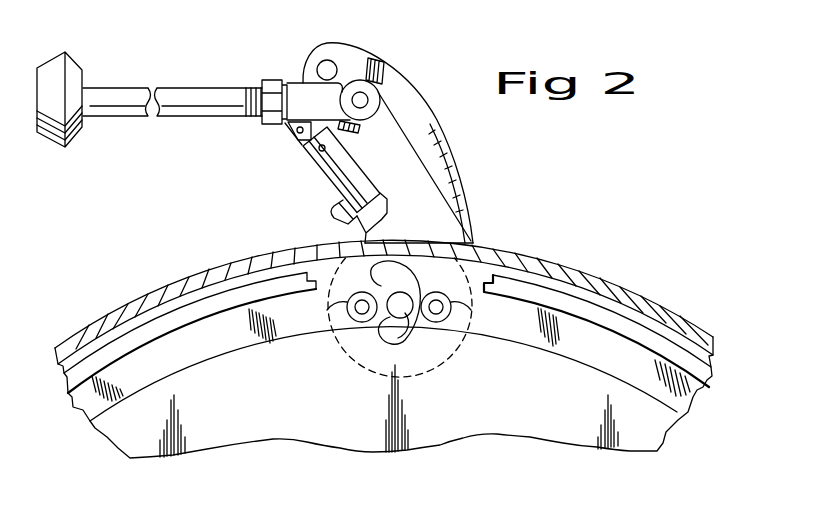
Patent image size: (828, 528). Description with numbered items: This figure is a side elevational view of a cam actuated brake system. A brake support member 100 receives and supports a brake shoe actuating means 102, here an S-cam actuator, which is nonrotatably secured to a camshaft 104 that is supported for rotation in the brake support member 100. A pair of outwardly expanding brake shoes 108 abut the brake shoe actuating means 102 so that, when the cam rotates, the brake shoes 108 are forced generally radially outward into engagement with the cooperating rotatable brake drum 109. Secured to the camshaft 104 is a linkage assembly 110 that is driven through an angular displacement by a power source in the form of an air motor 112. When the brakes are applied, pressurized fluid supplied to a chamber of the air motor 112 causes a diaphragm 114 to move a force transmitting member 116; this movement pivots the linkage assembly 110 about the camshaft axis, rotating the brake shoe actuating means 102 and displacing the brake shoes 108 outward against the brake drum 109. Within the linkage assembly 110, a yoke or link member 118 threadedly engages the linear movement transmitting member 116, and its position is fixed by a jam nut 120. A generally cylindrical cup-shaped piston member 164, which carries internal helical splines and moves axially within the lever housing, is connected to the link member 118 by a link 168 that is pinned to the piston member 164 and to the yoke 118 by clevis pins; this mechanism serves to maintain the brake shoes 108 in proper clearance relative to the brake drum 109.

The brake support member 100 is at (660, 427).
The brake shoe actuating means 102 is at (396, 304).
The camshaft 104 is at (405, 312).
The brake shoes 108 is at (222, 346).
The brake drum 109 is at (667, 317).
The linkage assembly 110 is at (457, 158).
The air motor 112 is at (82, 58).
The diaphragm 114 is at (55, 140).
The force transmitting member 116 is at (197, 97).
The link member 118 is at (297, 87).
The jam nut 120 is at (272, 80).
The piston member 164 is at (323, 177).
The link 168 is at (305, 142).